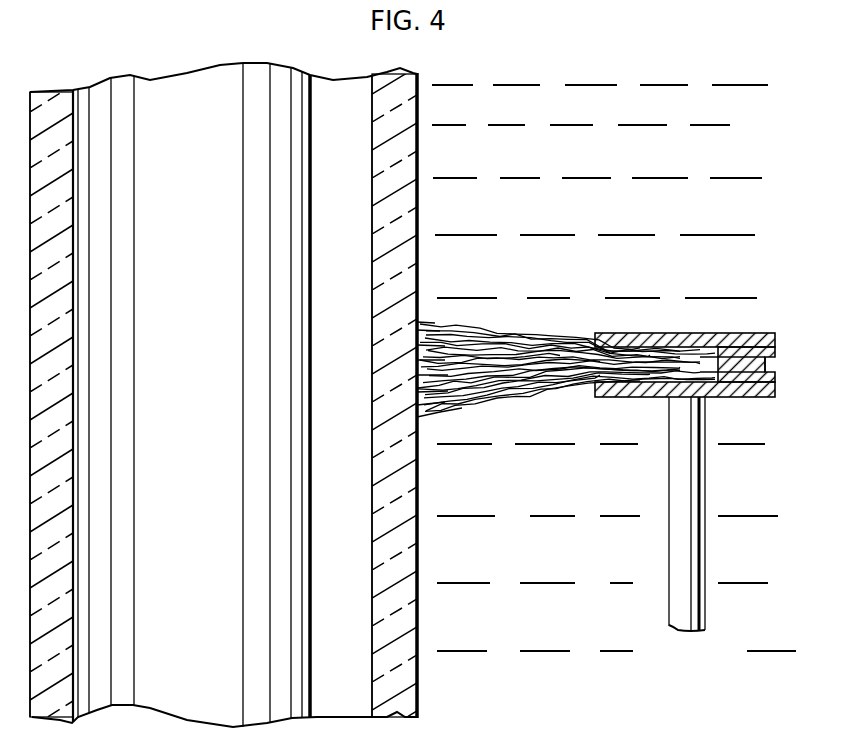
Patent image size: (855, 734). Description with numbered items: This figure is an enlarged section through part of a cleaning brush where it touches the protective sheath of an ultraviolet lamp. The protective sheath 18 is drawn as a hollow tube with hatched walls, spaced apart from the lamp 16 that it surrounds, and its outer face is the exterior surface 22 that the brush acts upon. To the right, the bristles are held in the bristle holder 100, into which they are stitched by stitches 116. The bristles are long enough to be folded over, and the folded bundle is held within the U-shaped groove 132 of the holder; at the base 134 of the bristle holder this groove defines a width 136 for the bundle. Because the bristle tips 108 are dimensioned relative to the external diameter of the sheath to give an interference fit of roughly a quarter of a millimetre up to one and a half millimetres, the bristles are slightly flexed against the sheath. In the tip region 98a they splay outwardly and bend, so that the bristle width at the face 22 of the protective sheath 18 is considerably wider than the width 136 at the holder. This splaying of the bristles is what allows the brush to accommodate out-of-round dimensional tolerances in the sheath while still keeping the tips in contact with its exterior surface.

The lamp 16 is at (277, 182).
The protective sheath 18 is at (398, 503).
The exterior surface 22 is at (418, 548).
The tip region 98a is at (437, 416).
The bristle holder 100 is at (720, 340).
The bristle tips 108 is at (430, 320).
The stitches 116 is at (771, 364).
The U-shaped groove 132 is at (643, 342).
The base 134 is at (590, 335).
The width 136 is at (580, 396).